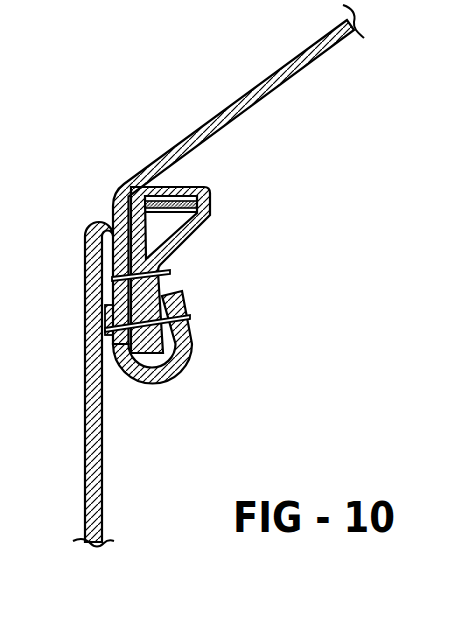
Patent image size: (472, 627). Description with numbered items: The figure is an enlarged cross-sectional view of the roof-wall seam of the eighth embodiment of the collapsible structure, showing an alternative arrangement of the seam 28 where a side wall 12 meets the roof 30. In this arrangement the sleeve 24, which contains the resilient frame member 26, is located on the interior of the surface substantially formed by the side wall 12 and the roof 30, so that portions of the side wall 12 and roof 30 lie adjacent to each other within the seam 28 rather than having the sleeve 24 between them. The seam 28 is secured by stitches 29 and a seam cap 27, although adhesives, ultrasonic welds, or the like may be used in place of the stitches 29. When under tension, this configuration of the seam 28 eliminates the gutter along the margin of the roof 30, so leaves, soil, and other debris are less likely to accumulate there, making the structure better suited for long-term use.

The side wall 12 is at (84, 455).
The sleeve 24 is at (211, 205).
The resilient frame member 26 is at (177, 188).
The seam cap 27 is at (180, 363).
The seam 28 is at (276, 289).
The stitches 29 is at (168, 264).
The roof 30 is at (269, 74).